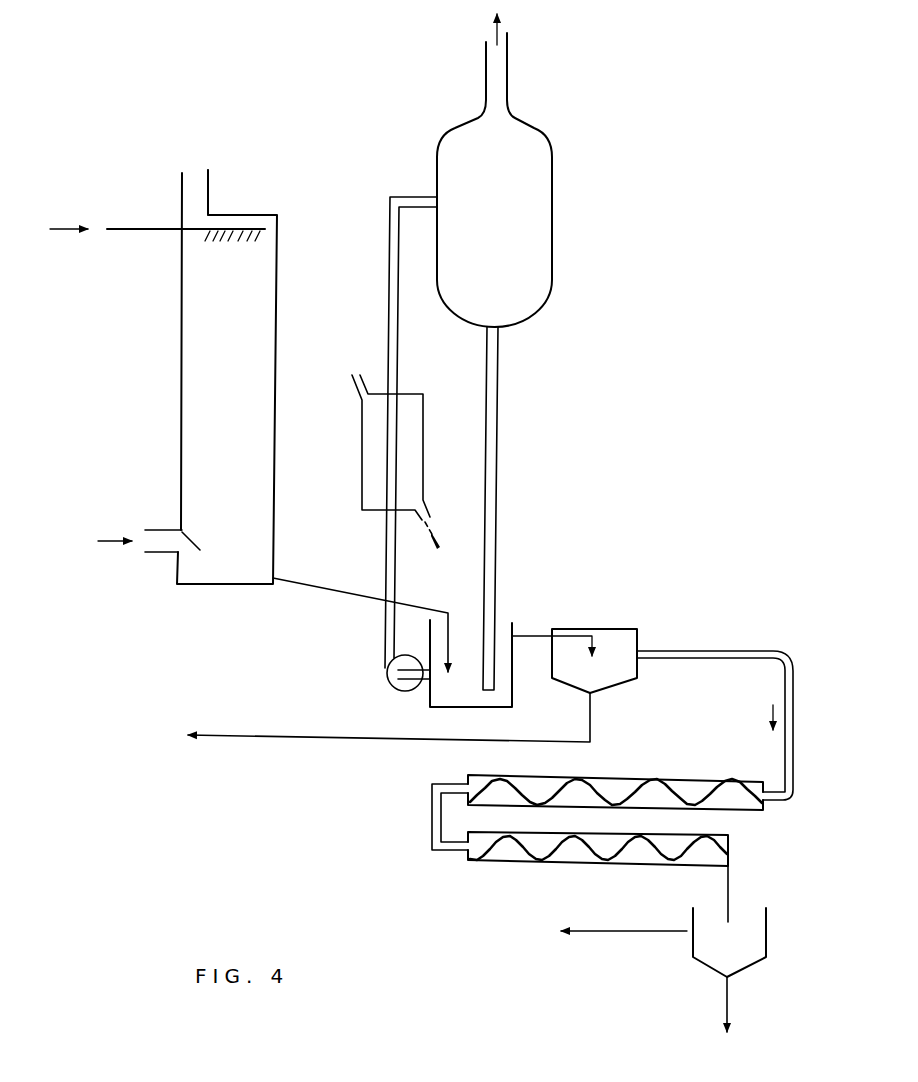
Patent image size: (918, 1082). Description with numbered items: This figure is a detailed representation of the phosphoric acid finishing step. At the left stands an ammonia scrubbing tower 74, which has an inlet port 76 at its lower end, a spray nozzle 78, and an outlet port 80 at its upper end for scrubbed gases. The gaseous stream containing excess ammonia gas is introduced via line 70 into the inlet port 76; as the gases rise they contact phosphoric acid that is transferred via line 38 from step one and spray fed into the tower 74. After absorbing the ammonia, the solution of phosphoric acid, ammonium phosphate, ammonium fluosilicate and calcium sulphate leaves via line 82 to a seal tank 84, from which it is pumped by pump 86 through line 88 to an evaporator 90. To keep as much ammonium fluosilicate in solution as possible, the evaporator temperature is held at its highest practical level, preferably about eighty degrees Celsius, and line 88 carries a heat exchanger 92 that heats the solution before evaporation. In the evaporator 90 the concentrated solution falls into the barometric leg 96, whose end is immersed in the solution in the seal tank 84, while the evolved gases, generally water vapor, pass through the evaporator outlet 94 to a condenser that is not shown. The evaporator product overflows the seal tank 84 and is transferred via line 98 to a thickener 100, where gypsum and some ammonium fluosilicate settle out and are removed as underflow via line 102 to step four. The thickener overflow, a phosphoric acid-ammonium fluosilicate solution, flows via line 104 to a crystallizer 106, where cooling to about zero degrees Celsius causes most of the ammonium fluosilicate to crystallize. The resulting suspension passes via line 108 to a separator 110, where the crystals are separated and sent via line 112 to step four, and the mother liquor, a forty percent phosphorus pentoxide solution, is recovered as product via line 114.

The line 38 is at (63, 229).
The line 70 is at (113, 539).
The ammonia scrubbing tower 74 is at (238, 407).
The inlet port 76 is at (157, 553).
The spray nozzle 78 is at (226, 240).
The outlet port 80 is at (210, 184).
The line 82 is at (330, 587).
The seal tank 84 is at (513, 693).
The pump 86 is at (389, 689).
The line 88 is at (397, 568).
The evaporator 90 is at (505, 233).
The heat exchanger 92 is at (424, 450).
The evaporator outlet 94 is at (508, 47).
The barometric leg 96 is at (500, 452).
The line 98 is at (528, 636).
The thickener 100 is at (608, 630).
The line 102 is at (378, 745).
The line 104 is at (705, 651).
The crystallizer 106 is at (678, 778).
The line 108 is at (730, 876).
The separator 110 is at (767, 930).
The line 112 is at (727, 1010).
The line 114 is at (618, 932).